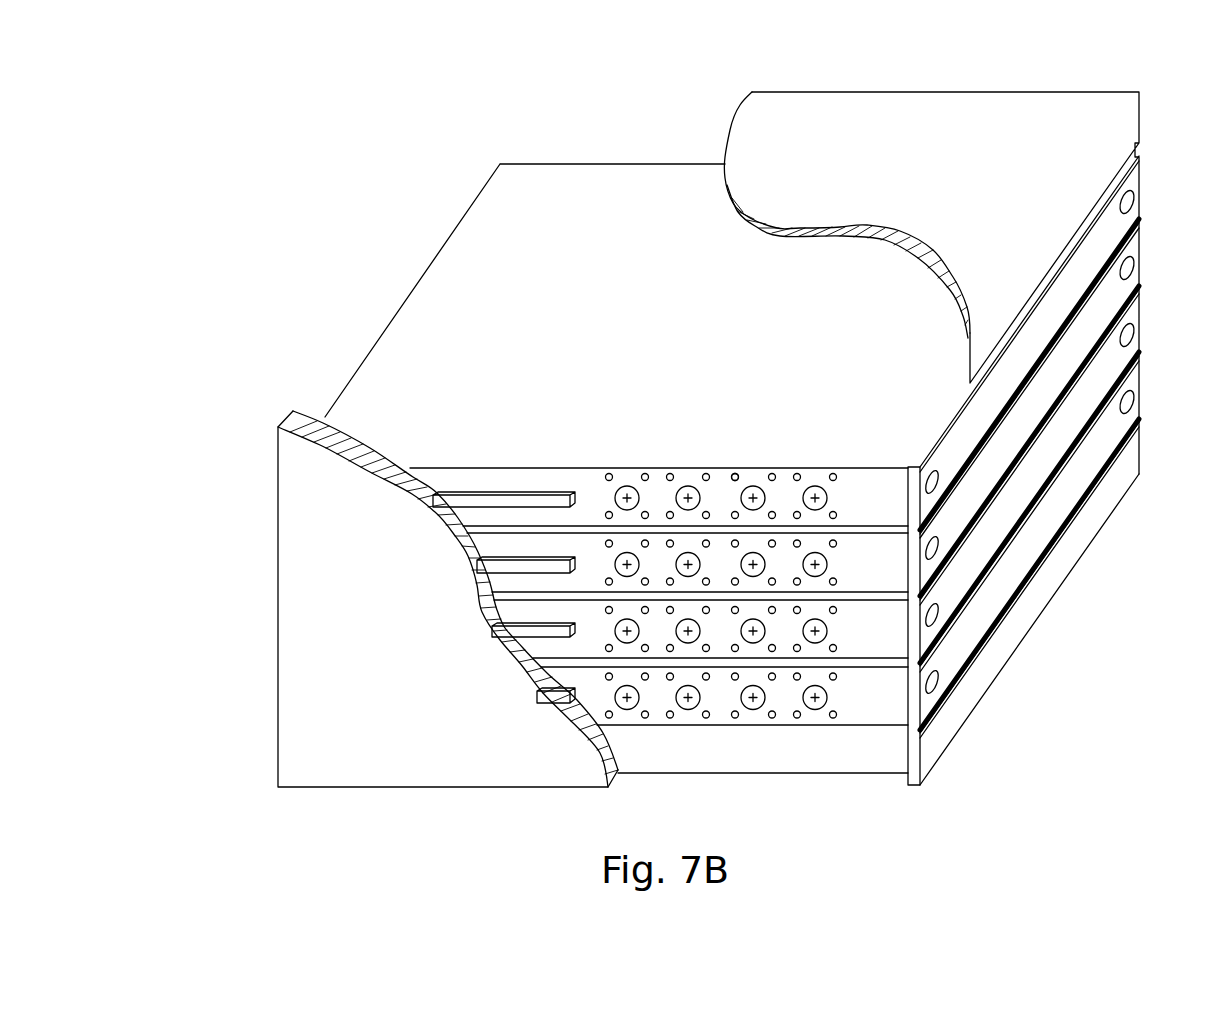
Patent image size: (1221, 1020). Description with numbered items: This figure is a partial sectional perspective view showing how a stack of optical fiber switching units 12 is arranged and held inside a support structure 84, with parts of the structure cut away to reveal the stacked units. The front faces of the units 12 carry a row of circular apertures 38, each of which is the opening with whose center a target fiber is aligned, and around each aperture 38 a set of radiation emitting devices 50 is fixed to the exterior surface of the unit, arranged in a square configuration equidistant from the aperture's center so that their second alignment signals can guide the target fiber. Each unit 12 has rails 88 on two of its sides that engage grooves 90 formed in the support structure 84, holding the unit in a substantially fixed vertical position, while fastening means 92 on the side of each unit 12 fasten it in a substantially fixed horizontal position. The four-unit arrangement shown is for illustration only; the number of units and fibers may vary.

The optical fiber switching unit 12 is at (408, 333).
The aperture 38 is at (815, 485).
The radiation emitting devices 50 is at (730, 474).
The support structure 84 is at (1025, 118).
The rails 88 is at (483, 490).
The grooves 90 is at (417, 495).
The fastening means 92 is at (1135, 195).